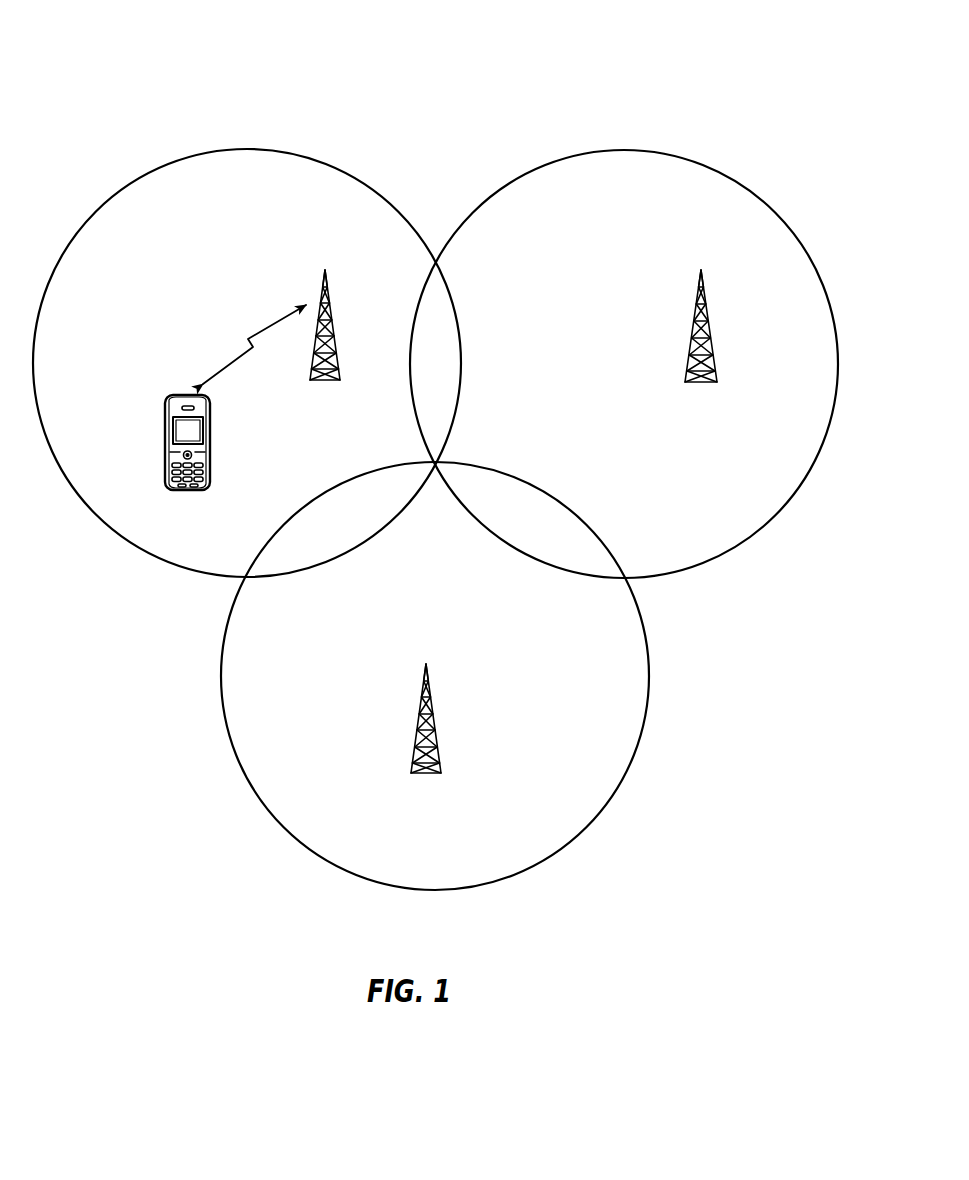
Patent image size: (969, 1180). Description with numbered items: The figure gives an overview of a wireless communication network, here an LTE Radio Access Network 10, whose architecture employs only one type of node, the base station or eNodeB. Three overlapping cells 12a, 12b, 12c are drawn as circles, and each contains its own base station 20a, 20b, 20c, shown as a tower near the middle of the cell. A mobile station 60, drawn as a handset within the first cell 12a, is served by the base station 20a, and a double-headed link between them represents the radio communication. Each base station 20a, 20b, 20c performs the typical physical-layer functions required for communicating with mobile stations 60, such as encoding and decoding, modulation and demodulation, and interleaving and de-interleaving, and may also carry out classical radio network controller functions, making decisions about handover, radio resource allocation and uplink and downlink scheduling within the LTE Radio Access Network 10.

The LTE Radio Access Network 10 is at (558, 95).
The cell 12a is at (338, 170).
The cell 12b is at (715, 170).
The cell 12c is at (605, 812).
The base station 20a is at (313, 281).
The base station 20b is at (690, 283).
The base station 20c is at (447, 688).
The mobile station 60 is at (169, 377).